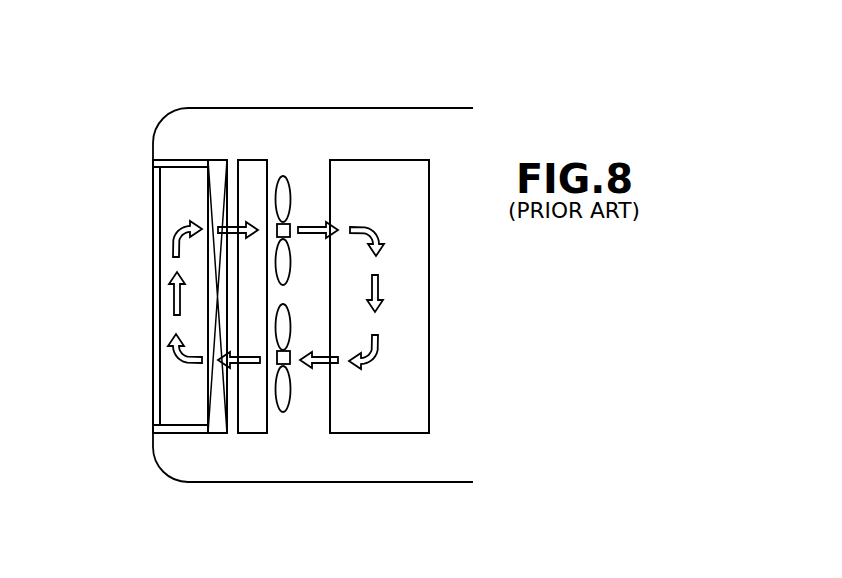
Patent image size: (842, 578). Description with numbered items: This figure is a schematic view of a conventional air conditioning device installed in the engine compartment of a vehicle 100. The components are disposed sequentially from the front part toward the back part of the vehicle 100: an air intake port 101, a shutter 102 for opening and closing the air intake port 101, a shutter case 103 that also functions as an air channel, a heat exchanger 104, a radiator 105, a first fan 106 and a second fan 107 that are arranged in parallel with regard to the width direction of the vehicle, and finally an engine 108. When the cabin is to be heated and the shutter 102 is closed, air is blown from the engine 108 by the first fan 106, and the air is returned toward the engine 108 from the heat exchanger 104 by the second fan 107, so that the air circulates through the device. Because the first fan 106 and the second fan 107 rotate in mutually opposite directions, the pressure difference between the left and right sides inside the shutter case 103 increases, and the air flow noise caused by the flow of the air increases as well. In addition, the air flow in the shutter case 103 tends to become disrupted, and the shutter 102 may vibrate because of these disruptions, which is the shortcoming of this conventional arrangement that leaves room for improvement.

The vehicle 100 is at (457, 106).
The air intake port 101 is at (157, 168).
The shutter 102 is at (160, 267).
The shutter case 103 is at (178, 165).
The heat exchanger 104 is at (215, 167).
The radiator 105 is at (253, 167).
The first fan 106 is at (283, 413).
The second fan 107 is at (287, 182).
The engine 108 is at (393, 160).